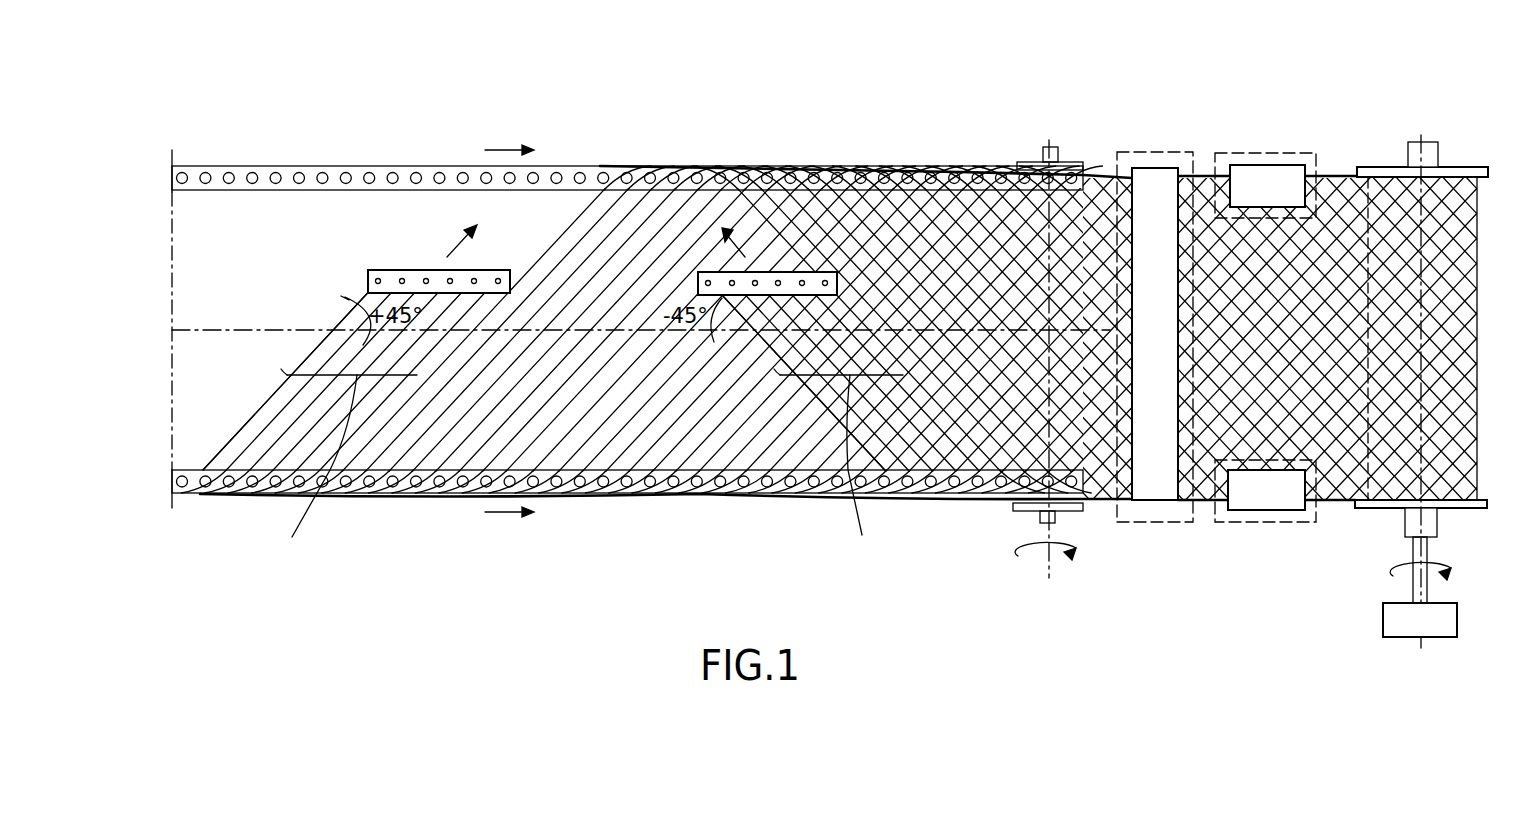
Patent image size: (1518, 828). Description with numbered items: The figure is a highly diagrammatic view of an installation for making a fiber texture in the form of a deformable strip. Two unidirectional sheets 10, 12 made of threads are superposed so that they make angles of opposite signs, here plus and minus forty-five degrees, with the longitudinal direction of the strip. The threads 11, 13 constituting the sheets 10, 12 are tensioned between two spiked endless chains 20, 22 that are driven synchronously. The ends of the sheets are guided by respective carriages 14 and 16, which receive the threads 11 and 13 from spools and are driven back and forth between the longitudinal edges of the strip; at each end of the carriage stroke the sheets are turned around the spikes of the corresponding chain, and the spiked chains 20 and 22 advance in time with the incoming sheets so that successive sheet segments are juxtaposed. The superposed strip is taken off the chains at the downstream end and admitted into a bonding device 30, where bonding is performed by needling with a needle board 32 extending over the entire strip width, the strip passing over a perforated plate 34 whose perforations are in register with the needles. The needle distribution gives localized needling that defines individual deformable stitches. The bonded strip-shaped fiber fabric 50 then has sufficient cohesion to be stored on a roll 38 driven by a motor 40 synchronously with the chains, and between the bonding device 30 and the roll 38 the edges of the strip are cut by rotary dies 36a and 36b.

The unidirectional sheet 10 is at (849, 364).
The thread 11 is at (268, 398).
The unidirectional sheet 12 is at (1105, 364).
The thread 13 is at (818, 408).
The carriage 14 is at (368, 270).
The carriage 16 is at (708, 272).
The spiked endless chain 20 is at (179, 493).
The spiked endless chain 22 is at (380, 167).
The bonding device 30 is at (1138, 545).
The needle board 32 is at (1156, 176).
The perforated plate 34 is at (1167, 515).
The rotary die 36a is at (1266, 504).
The rotary die 36b is at (1270, 166).
The roll 38 is at (1383, 166).
The take-up roll drive motor 40 is at (1398, 637).
The strip-shaped fiber fabric 50 is at (1333, 476).